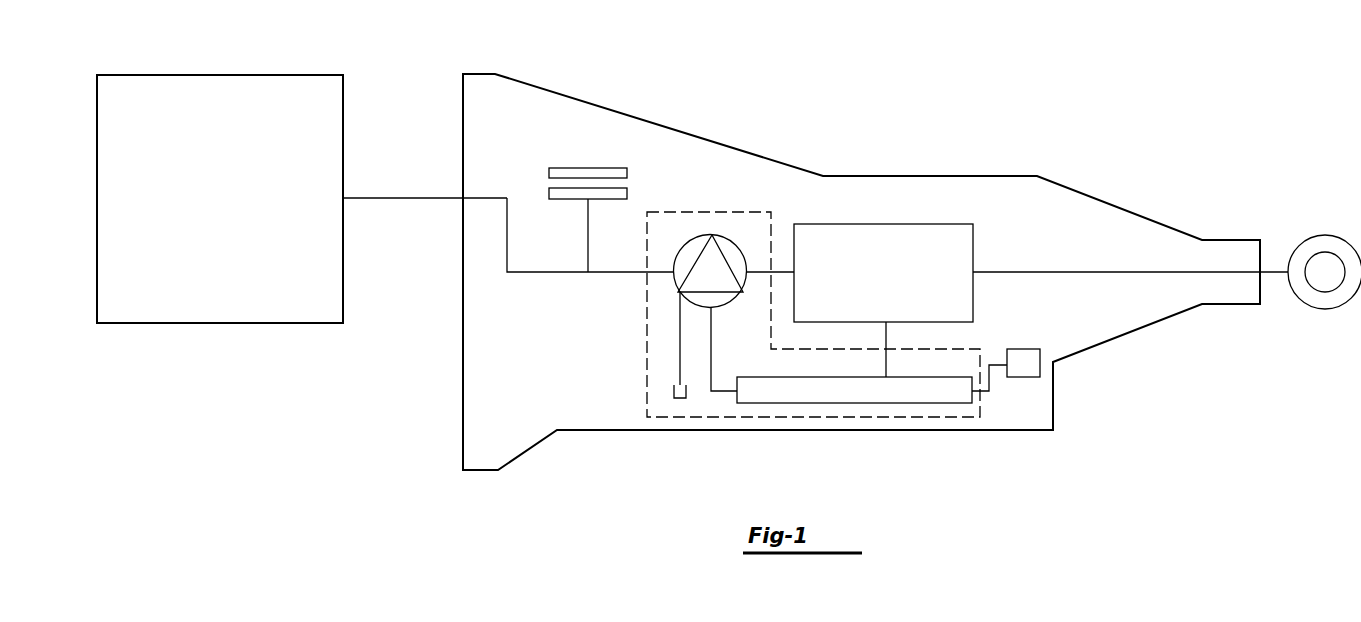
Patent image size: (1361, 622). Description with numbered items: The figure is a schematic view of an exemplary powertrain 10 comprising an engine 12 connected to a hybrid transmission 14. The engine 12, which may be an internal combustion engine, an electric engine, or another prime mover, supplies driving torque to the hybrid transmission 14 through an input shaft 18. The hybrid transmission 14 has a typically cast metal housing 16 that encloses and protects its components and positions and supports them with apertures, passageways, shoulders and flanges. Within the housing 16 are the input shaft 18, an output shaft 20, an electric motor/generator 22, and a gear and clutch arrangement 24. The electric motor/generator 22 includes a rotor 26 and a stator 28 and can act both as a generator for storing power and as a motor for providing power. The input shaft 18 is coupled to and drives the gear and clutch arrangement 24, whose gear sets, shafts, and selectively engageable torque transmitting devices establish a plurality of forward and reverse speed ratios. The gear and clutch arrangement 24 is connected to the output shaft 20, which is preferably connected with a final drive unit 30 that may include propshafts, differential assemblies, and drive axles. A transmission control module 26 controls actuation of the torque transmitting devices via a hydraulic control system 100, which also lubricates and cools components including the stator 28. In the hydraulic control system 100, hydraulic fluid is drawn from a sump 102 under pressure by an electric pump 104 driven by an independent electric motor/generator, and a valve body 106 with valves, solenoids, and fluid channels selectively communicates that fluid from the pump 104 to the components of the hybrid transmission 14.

The powertrain 10 is at (870, 77).
The engine 12 is at (233, 216).
The hybrid transmission 14 is at (1023, 177).
The housing 16 is at (988, 175).
The input shaft 18 is at (403, 198).
The output shaft 20 is at (1018, 270).
The electric motor/generator 22 is at (588, 161).
The gear and clutch arrangement 24 is at (908, 223).
The rotor 26 is at (628, 193).
The stator 28 is at (549, 173).
The final drive unit 30 is at (1325, 235).
The hydraulic control system 100 is at (945, 417).
The sump 102 is at (674, 392).
The electric pump 104 is at (737, 243).
The valve body 106 is at (840, 403).